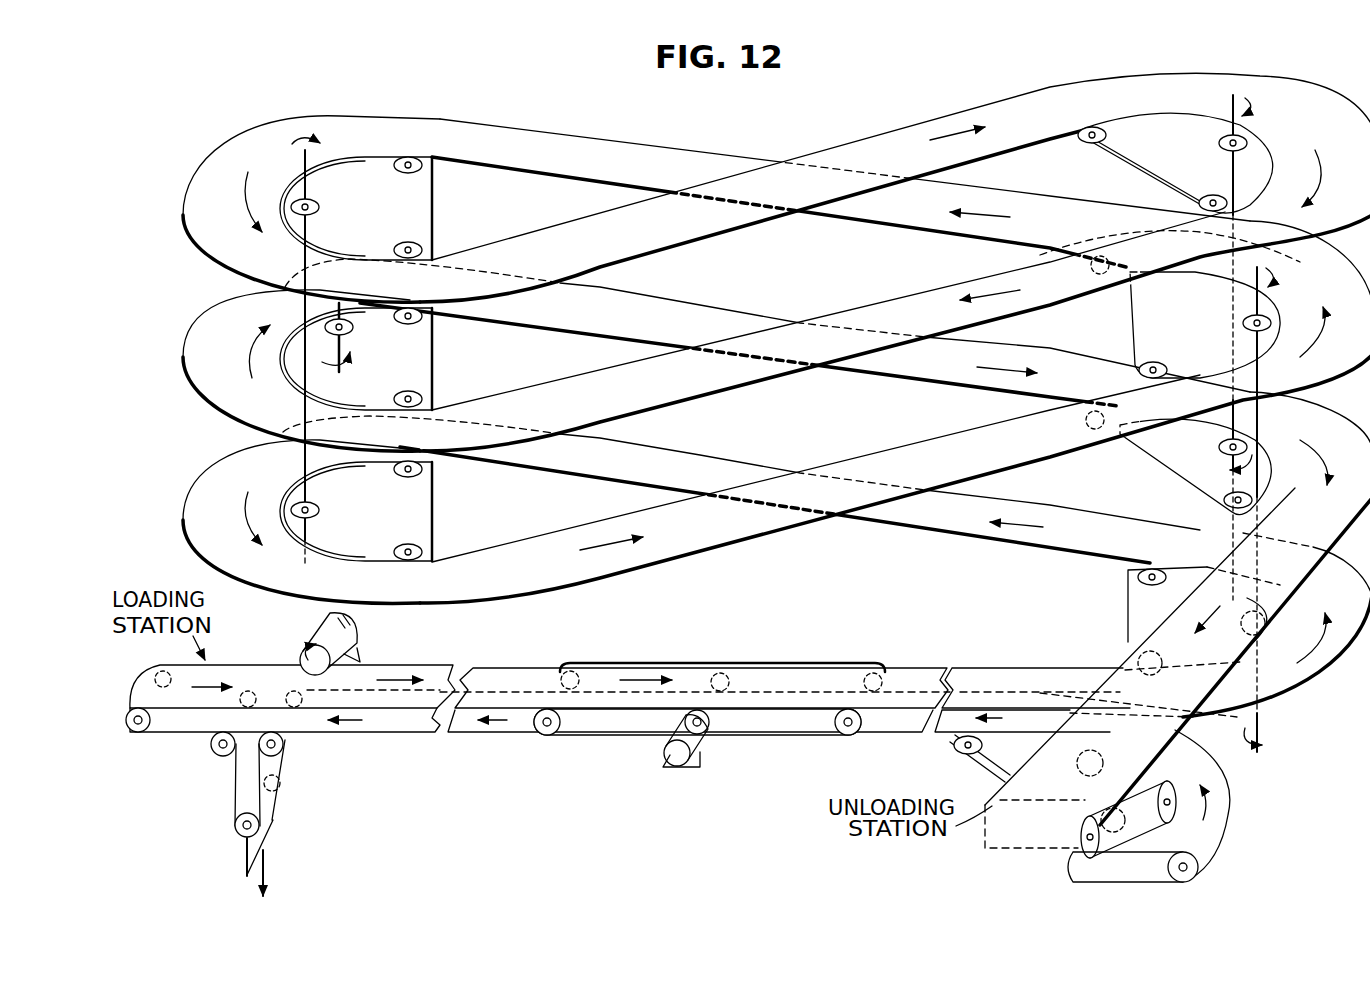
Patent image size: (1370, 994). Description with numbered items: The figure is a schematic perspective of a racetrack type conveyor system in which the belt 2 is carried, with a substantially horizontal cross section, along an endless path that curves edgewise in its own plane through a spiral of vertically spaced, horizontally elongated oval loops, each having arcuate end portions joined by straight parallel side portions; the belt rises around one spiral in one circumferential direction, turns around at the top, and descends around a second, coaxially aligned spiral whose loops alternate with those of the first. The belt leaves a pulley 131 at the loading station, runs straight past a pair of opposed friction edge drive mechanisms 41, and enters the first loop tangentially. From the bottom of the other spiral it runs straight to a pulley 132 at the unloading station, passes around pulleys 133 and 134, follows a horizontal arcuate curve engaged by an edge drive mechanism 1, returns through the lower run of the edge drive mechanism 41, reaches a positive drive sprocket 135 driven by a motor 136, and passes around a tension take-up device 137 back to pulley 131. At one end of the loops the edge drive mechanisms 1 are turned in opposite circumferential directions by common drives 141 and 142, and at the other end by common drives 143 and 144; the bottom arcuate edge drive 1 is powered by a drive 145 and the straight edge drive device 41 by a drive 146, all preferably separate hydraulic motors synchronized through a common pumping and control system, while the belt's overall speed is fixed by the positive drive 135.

The edge drive mechanism 1 is at (437, 213).
The belt 2 is at (923, 118).
The friction edge drive mechanism 41 is at (700, 664).
The pulley 131 is at (135, 732).
The pulley 132 is at (1106, 848).
The pulley 133 is at (1205, 832).
The pulley 134 is at (1199, 877).
The positive drive sprocket 135 is at (282, 752).
The motor 136 is at (350, 632).
The tension take-up device 137 is at (234, 836).
The common drive 141 is at (316, 212).
The common drive 142 is at (346, 346).
The common drive 143 is at (1256, 424).
The common drive 144 is at (1248, 350).
The drive 145 is at (1084, 752).
The drive 146 is at (710, 724).